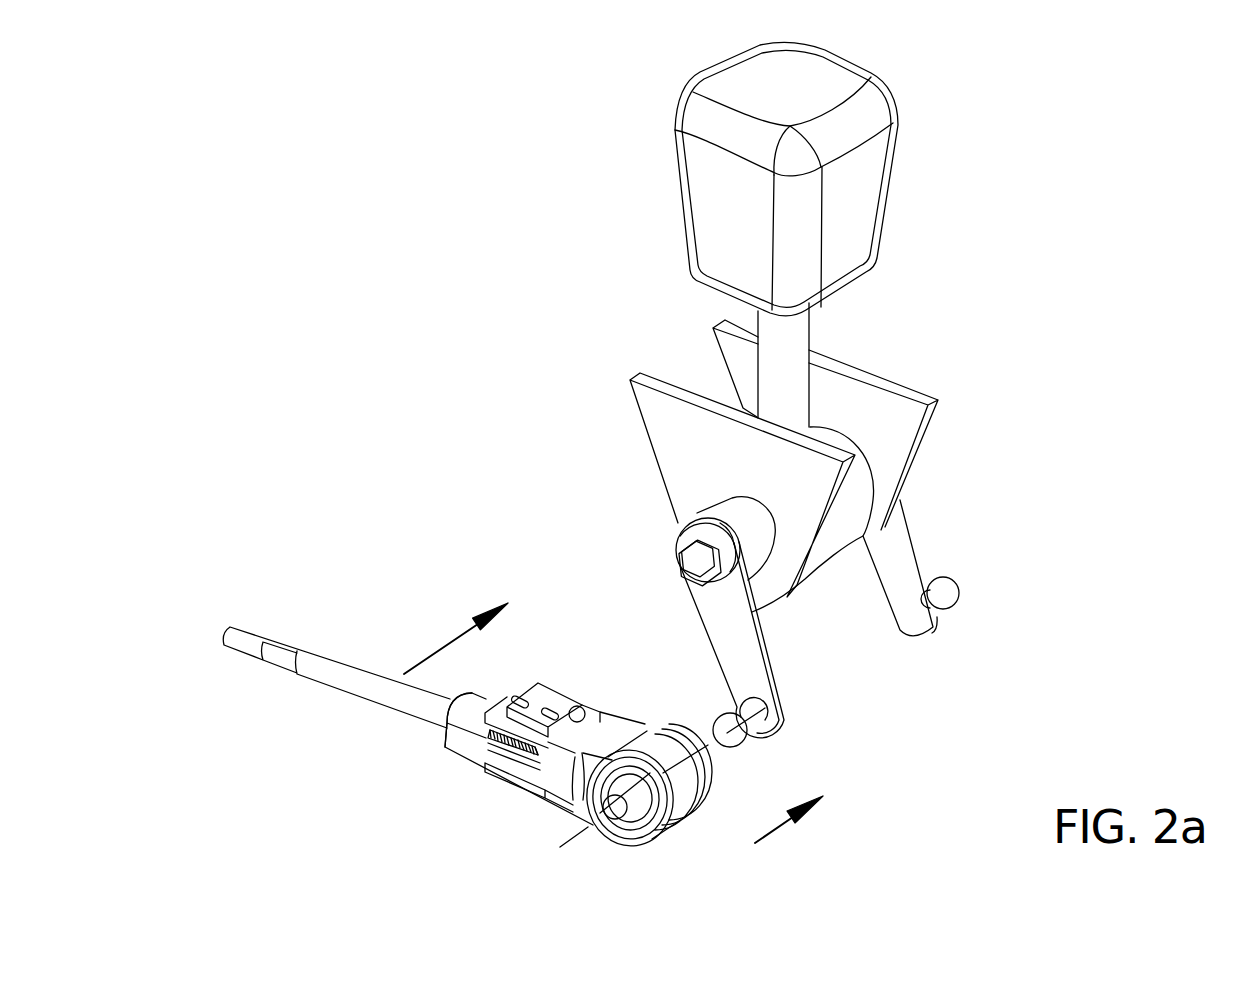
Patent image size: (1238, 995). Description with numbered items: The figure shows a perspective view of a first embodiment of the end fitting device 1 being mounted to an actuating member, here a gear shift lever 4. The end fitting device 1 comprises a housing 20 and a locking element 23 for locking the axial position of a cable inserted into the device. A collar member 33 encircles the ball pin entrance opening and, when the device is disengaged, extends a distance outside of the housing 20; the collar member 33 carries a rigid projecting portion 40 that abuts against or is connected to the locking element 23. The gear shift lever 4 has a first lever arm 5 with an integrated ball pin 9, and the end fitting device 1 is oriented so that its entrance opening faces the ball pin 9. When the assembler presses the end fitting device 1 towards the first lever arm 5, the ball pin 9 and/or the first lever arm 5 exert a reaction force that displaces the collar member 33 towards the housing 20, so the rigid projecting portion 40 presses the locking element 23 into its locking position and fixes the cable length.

The end fitting device 1 is at (368, 766).
The gear shift lever 4 is at (922, 216).
The first lever arm 5 is at (823, 668).
The ball pin 9 is at (742, 745).
The housing 20 is at (467, 740).
The locking element 23 is at (560, 697).
The rigid projecting portion 40 is at (615, 717).
The collar member 33 is at (657, 723).